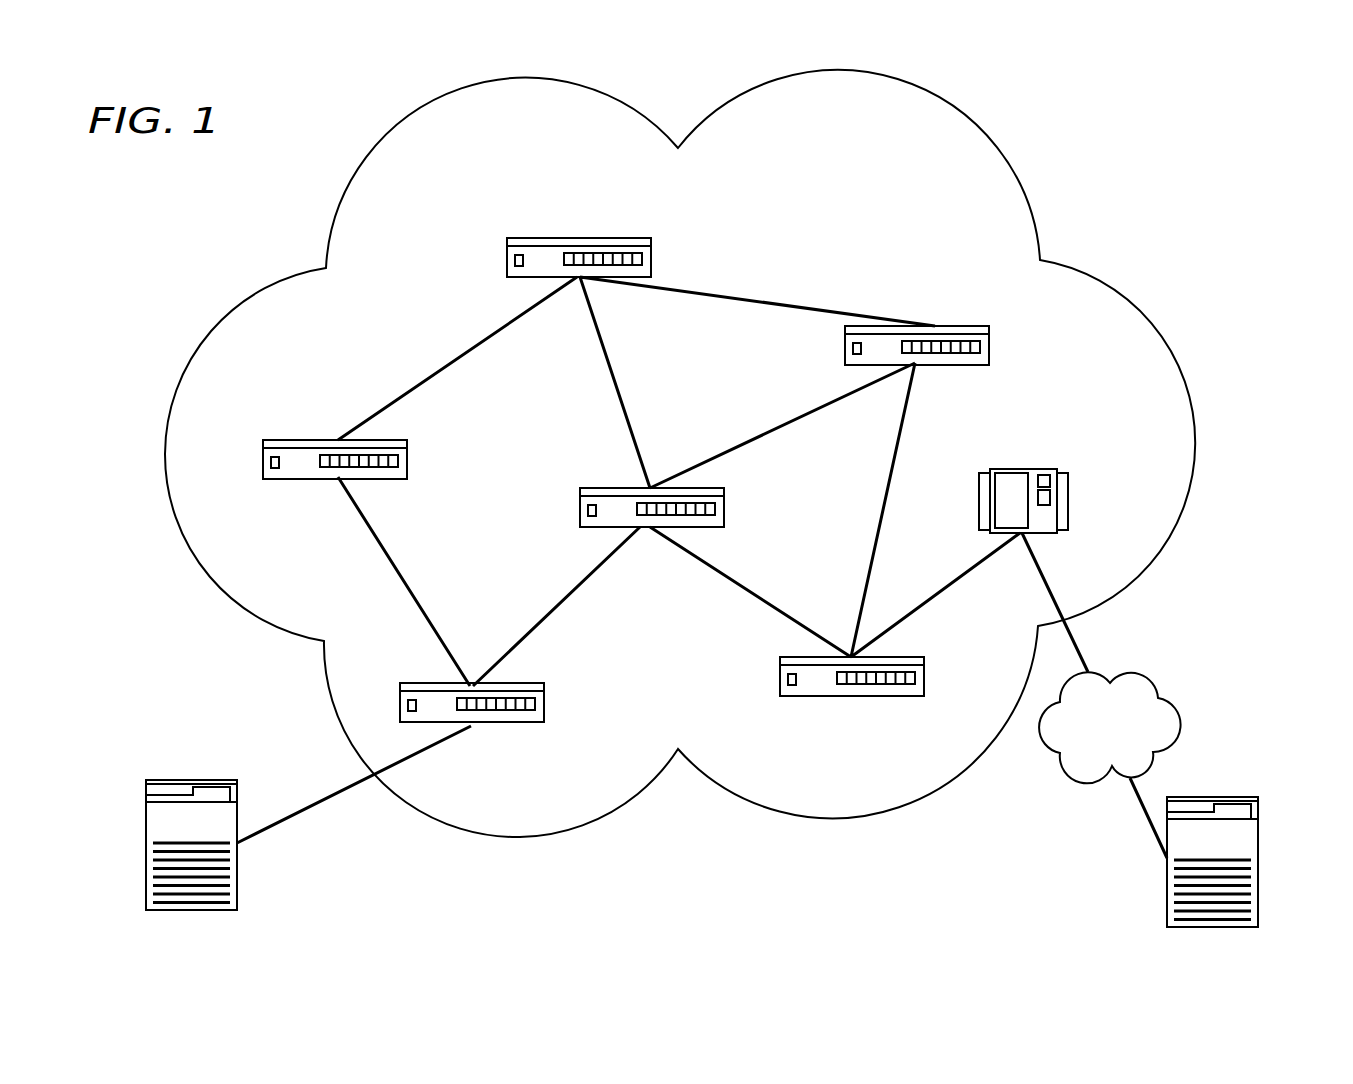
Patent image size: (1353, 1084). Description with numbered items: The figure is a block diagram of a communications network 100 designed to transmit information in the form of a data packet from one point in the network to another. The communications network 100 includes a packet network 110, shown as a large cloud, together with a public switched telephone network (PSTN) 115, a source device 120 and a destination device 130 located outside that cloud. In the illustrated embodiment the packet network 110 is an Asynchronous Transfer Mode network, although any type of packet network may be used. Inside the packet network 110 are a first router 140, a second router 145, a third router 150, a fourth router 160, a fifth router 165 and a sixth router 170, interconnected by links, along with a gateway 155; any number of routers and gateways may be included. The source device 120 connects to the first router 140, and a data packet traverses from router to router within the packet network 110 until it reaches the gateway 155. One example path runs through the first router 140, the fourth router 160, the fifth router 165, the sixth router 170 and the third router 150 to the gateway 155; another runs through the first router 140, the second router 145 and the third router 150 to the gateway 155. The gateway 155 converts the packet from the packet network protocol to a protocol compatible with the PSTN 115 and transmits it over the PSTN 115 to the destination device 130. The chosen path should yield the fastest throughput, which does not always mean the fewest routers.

The communications network 100 is at (1180, 154).
The packet network 110 is at (938, 94).
The public switched telephone network (PSTN) 115 is at (1155, 676).
The source device 120 is at (175, 780).
The destination device 130 is at (1245, 797).
The first router 140 is at (544, 698).
The second router 145 is at (580, 503).
The third router 150 is at (840, 696).
The gateway 155 is at (1035, 469).
The fourth router 160 is at (300, 440).
The fifth router 165 is at (555, 238).
The sixth router 170 is at (955, 326).